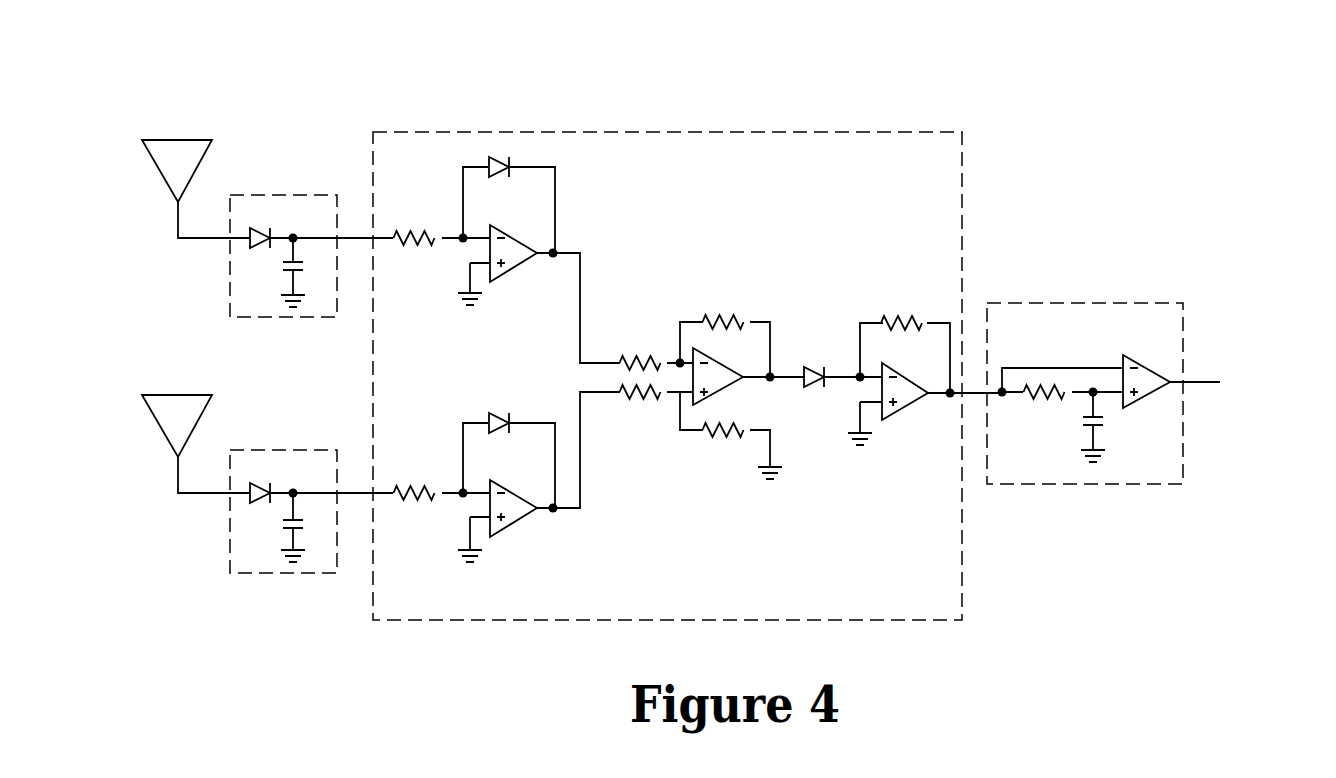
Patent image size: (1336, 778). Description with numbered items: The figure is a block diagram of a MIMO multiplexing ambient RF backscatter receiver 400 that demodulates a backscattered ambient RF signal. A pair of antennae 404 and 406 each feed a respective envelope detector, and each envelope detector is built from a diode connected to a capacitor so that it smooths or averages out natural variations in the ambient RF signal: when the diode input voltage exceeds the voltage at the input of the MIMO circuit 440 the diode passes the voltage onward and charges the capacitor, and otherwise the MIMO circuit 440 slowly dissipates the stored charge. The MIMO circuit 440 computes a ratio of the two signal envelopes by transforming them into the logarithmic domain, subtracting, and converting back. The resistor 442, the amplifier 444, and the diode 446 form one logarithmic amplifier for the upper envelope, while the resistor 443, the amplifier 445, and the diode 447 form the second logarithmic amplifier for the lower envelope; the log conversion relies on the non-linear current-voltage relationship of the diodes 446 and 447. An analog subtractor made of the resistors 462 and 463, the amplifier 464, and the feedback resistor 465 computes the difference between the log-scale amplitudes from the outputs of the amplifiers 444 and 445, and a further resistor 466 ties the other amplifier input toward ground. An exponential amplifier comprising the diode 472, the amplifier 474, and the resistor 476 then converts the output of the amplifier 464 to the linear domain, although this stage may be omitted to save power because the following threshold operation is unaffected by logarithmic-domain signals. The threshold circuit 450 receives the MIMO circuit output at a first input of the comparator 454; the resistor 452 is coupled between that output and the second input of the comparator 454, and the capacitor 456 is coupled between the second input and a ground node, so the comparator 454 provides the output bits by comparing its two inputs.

The ambient RF backscatter receiver 400 is at (1083, 26).
The antenna 404 is at (178, 140).
The antenna 406 is at (178, 395).
The MIMO circuit 440 is at (660, 132).
The resistor 442 is at (415, 236).
The resistor 443 is at (415, 491).
The amplifier 444 is at (523, 262).
The amplifier 445 is at (523, 517).
The diode 446 is at (505, 158).
The diode 447 is at (505, 413).
The threshold circuit 450 is at (1082, 303).
The resistor 452 is at (1045, 399).
The comparator 454 is at (1133, 403).
The capacitor 456 is at (1085, 428).
The resistor 462 is at (642, 356).
The resistor 463 is at (640, 399).
The amplifier 464 is at (722, 389).
The resistor 465 is at (726, 315).
The ground resistor 466 is at (732, 438).
The diode 472 is at (818, 367).
The amplifier 474 is at (905, 407).
The resistor 476 is at (906, 316).